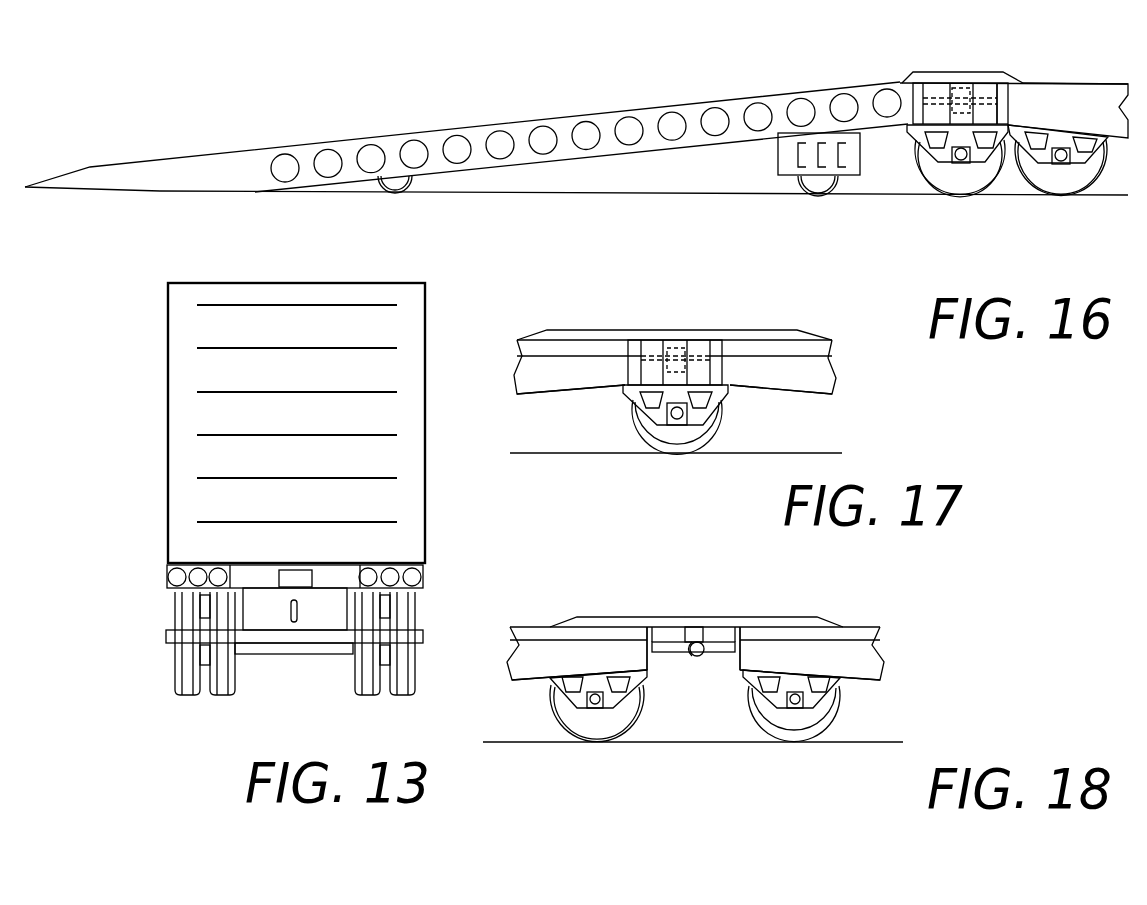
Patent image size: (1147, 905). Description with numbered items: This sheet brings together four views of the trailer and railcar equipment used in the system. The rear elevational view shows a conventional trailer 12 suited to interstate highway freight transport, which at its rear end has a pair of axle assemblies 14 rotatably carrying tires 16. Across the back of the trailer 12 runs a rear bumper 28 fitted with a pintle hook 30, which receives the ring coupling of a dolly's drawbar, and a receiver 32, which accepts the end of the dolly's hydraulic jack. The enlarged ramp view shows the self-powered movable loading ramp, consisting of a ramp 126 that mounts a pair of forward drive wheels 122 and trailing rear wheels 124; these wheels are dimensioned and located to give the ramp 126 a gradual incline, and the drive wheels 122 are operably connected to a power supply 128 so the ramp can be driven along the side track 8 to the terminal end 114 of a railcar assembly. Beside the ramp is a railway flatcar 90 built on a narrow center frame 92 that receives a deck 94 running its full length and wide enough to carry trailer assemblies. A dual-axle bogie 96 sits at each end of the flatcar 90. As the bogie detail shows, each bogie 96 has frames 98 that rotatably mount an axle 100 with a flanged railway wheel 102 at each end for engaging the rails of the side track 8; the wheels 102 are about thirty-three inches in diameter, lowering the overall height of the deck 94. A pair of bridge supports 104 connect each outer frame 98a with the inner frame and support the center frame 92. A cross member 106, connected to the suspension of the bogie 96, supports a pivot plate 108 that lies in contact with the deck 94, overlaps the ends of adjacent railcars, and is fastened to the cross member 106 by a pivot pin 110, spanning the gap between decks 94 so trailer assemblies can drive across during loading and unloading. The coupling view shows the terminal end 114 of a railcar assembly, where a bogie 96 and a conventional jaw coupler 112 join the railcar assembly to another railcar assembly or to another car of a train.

In FIG. 16, the side track 8 is at (572, 194).
In FIG. 17, the side track 8 is at (577, 456).
In FIG. 18, the side track 8 is at (713, 744).
In FIG. 13, the trailer 12 is at (119, 362).
In FIG. 13, the axle assemblies 14 is at (290, 657).
In FIG. 13, the tires 16 is at (410, 693).
In FIG. 13, the rear bumper 28 is at (166, 643).
In FIG. 13, the pintle hook 30 is at (290, 615).
In FIG. 13, the receiver 32 is at (290, 568).
In FIG. 16, the railway flatcar 90 is at (1113, 169).
In FIG. 16, the center frame 92 is at (1100, 108).
In FIG. 16, the deck 94 is at (1102, 84).
In FIG. 17, the deck 94 is at (525, 340).
In FIG. 18, the deck 94 is at (538, 626).
In FIG. 16, the bogie 96 is at (914, 207).
In FIG. 17, the bogie 96 is at (631, 474).
In FIG. 18, the bogie 96 is at (623, 756).
In FIG. 17, the frames 98 is at (522, 365).
In FIG. 18, the frames 98 is at (517, 652).
In FIG. 16, the outer frame 98a is at (975, 163).
In FIG. 17, the outer frame 98a is at (690, 425).
In FIG. 18, the outer frame 98a is at (593, 704).
In FIG. 16, the axle 100 is at (1053, 164).
In FIG. 17, the axle 100 is at (672, 420).
In FIG. 18, the axle 100 is at (597, 708).
In FIG. 16, the flanged railway wheel 102 is at (1038, 164).
In FIG. 17, the flanged railway wheel 102 is at (683, 425).
In FIG. 18, the flanged railway wheel 102 is at (550, 713).
In FIG. 16, the bridge supports 104 is at (1010, 112).
In FIG. 17, the bridge supports 104 is at (637, 370).
In FIG. 18, the bridge supports 104 is at (695, 689).
In FIG. 16, the cross member 106 is at (968, 83).
In FIG. 17, the cross member 106 is at (680, 347).
In FIG. 16, the pivot plate 108 is at (903, 76).
In FIG. 17, the pivot plate 108 is at (557, 329).
In FIG. 18, the pivot plate 108 is at (660, 613).
In FIG. 16, the pivot pin 110 is at (953, 88).
In FIG. 17, the pivot pin 110 is at (668, 348).
In FIG. 18, the pivot pin 110 is at (713, 633).
In FIG. 18, the jaw coupler 112 is at (703, 653).
In FIG. 16, the terminal end 114 is at (1023, 70).
In FIG. 18, the terminal end 114 is at (647, 657).
In FIG. 16, the forward drive wheels 122 is at (838, 198).
In FIG. 16, the trailing rear wheels 124 is at (382, 193).
In FIG. 16, the ramp 126 is at (303, 145).
In FIG. 16, the power supply 128 is at (776, 192).